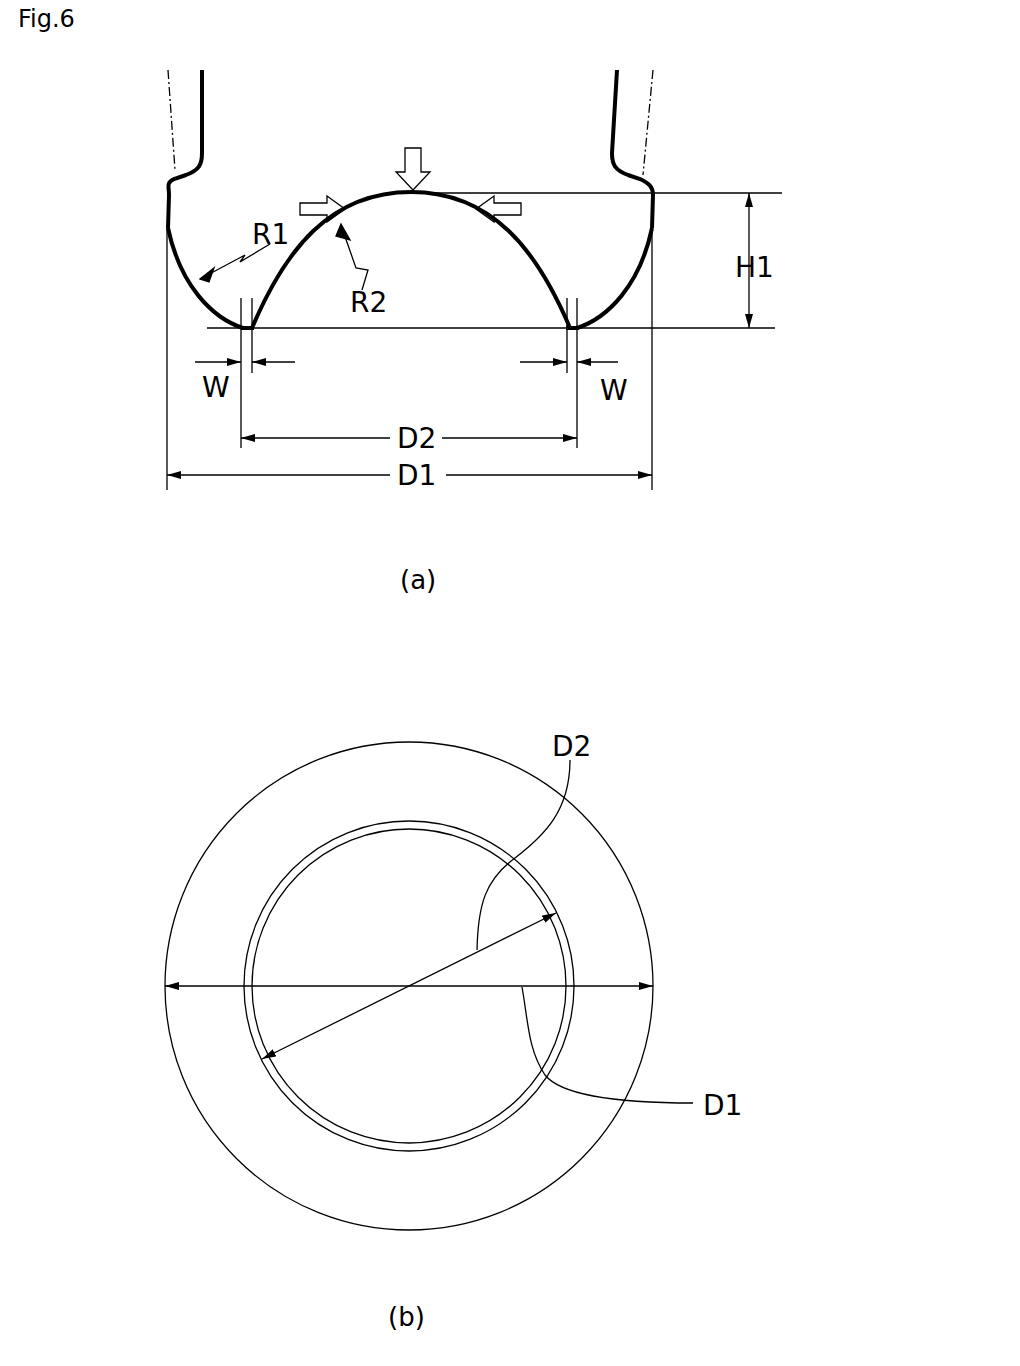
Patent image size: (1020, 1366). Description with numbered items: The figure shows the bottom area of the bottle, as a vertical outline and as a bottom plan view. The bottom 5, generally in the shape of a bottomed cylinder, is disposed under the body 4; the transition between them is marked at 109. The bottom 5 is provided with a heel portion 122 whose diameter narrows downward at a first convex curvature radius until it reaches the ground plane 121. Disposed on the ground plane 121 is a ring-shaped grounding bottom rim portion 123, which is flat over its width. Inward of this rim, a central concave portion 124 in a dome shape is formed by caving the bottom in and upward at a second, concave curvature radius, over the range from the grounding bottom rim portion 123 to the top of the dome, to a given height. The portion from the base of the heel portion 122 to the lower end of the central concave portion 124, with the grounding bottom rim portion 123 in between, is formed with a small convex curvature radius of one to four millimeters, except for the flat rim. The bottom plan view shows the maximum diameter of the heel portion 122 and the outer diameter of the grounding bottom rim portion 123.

The body 4 is at (202, 108).
The bottom 5 is at (152, 254).
The shoulder portion 109 is at (192, 177).
The ground plane 121 is at (398, 330).
The heel portion 122 is at (628, 283).
The grounding bottom rim portion 123 is at (575, 338).
The central concave portion 124 is at (515, 243).